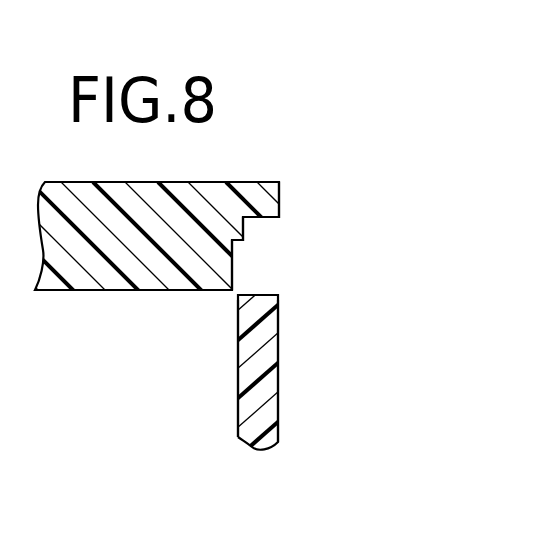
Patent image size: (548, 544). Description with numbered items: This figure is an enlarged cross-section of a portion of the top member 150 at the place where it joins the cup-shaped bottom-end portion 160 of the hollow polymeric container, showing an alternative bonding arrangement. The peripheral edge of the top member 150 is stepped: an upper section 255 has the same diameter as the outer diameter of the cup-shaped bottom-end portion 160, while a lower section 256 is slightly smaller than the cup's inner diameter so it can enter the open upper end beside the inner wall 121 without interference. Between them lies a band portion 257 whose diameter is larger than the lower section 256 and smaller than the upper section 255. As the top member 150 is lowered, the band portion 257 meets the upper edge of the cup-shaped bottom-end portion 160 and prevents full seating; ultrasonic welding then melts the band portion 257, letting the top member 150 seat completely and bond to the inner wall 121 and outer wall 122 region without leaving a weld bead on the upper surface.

The top member 150 is at (127, 200).
The upper section 255 is at (280, 192).
The band portion 257 is at (244, 228).
The lower section 256 is at (233, 267).
The cup-shaped bottom-end portion 160 is at (270, 325).
The inner wall 121 is at (237, 380).
The outer side surface 122 is at (279, 380).